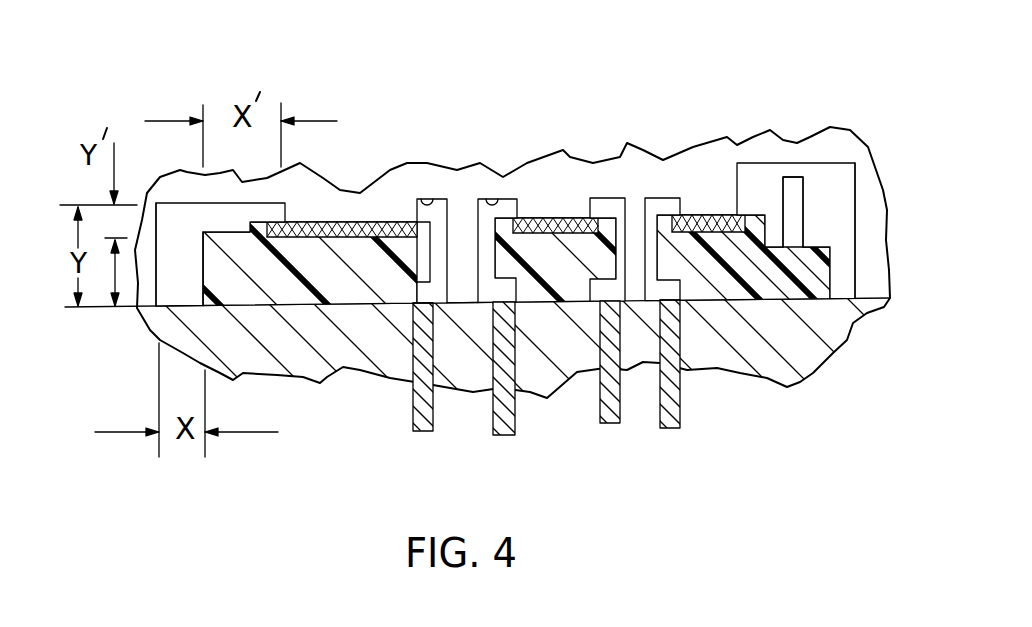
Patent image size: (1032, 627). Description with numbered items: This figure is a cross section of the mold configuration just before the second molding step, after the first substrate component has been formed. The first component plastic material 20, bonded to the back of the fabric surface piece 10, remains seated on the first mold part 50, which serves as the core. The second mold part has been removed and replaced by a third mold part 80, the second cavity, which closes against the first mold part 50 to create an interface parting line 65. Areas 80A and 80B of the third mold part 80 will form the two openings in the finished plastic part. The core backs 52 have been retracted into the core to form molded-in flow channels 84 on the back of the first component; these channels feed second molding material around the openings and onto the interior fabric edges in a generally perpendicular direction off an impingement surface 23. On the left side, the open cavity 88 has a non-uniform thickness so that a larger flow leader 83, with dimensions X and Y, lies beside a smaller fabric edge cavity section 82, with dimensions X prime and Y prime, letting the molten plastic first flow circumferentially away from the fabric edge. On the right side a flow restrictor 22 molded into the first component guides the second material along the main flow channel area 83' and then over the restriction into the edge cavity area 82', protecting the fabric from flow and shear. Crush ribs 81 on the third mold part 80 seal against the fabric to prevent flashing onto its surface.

The fabric surface piece 10 is at (418, 200).
The first component plastic material 20 is at (345, 284).
The flow restrictor 22 is at (792, 185).
The impingement surface 23 is at (507, 203).
The first mold part 50 is at (547, 395).
The core backs 52 is at (420, 432).
The interface parting line 65 is at (470, 306).
The third mold part 80 is at (568, 175).
The area of the third mold part 80A is at (398, 212).
The area of the third mold part 80B is at (637, 212).
The crush ribs 81 is at (290, 224).
The fabric edge cavity section 82 is at (206, 220).
The edge cavity area 82' is at (796, 167).
The flow leader 83 is at (142, 303).
The main flow channel area 83' is at (839, 288).
The flow channels 84 is at (415, 305).
The open cavity 88 is at (176, 248).